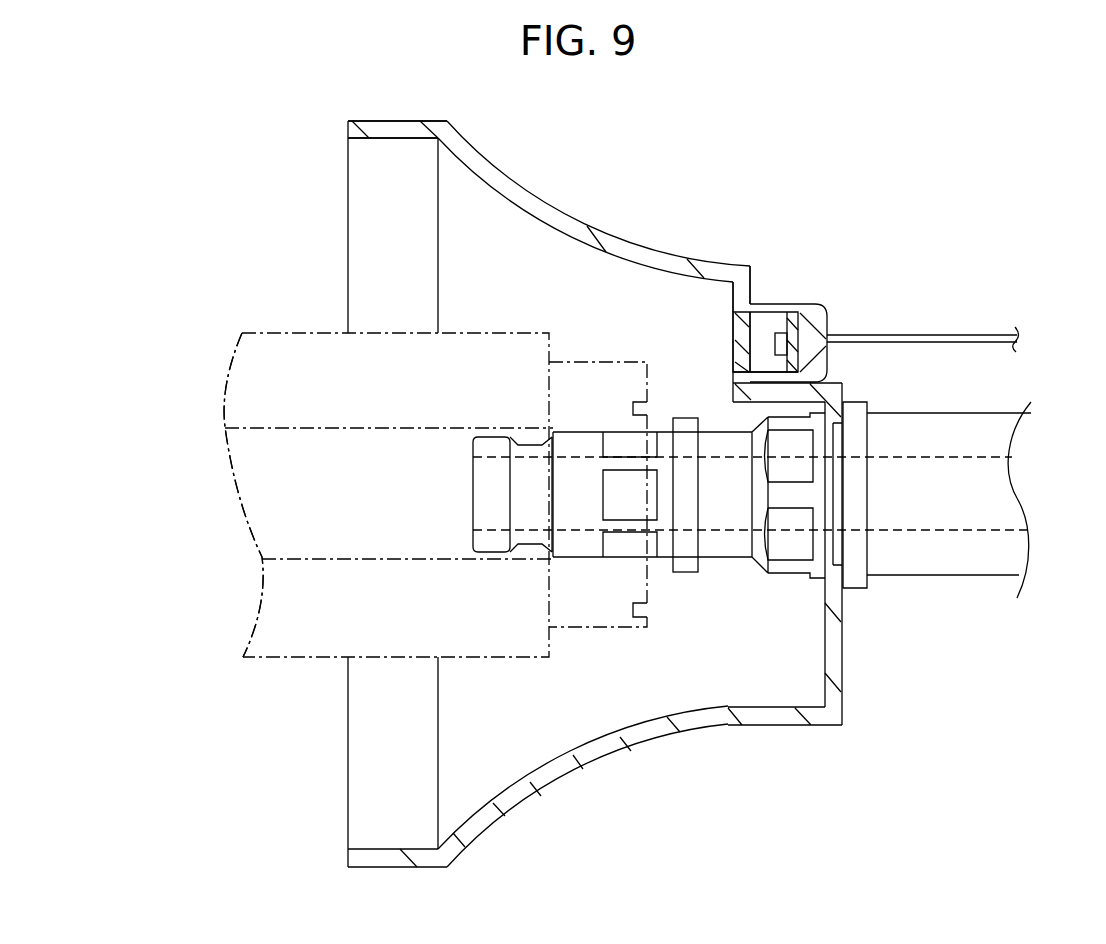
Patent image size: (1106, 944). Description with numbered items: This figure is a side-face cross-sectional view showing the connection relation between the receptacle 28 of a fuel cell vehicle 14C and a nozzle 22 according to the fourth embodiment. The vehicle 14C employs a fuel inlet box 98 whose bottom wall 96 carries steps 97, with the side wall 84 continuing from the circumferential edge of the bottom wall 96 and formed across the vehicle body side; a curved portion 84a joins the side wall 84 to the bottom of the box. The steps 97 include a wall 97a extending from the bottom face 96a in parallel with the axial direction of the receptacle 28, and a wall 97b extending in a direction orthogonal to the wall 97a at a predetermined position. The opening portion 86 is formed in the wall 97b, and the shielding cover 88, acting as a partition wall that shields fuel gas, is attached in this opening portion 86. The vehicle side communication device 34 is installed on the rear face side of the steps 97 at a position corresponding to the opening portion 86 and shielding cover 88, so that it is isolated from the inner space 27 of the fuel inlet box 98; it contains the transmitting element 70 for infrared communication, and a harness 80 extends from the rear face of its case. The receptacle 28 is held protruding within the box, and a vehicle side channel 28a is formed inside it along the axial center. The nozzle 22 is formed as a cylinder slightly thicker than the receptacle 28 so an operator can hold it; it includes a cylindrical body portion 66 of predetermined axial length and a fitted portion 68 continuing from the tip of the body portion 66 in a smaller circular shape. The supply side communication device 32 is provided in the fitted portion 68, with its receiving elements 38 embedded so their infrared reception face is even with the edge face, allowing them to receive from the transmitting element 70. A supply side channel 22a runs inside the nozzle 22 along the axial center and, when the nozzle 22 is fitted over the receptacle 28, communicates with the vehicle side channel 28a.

The side wall 84 is at (389, 120).
The fuel cell vehicle 14C is at (338, 145).
The curved portion 84a is at (536, 190).
The fuel inlet box 98 is at (684, 219).
The vehicle side communication device 34 is at (832, 296).
The transmitting element 70 is at (780, 333).
The wall 97b is at (740, 301).
The opening portion 86 is at (746, 318).
The shielding cover 88 is at (746, 366).
The steps 97 is at (737, 391).
The harness 80 is at (960, 334).
The receptacle 28 is at (1046, 399).
The vehicle side channel 28a is at (942, 528).
The wall 97a is at (747, 401).
The supply side channel 22a is at (297, 556).
The nozzle 22 is at (208, 394).
The body portion 66 is at (313, 331).
The fitted portion 68 is at (581, 360).
The receiving elements 38 is at (649, 610).
The supply side communication device 32 is at (649, 610).
The bottom wall 96 is at (833, 652).
The bottom face 96a is at (835, 687).
The inner space 27 is at (503, 763).